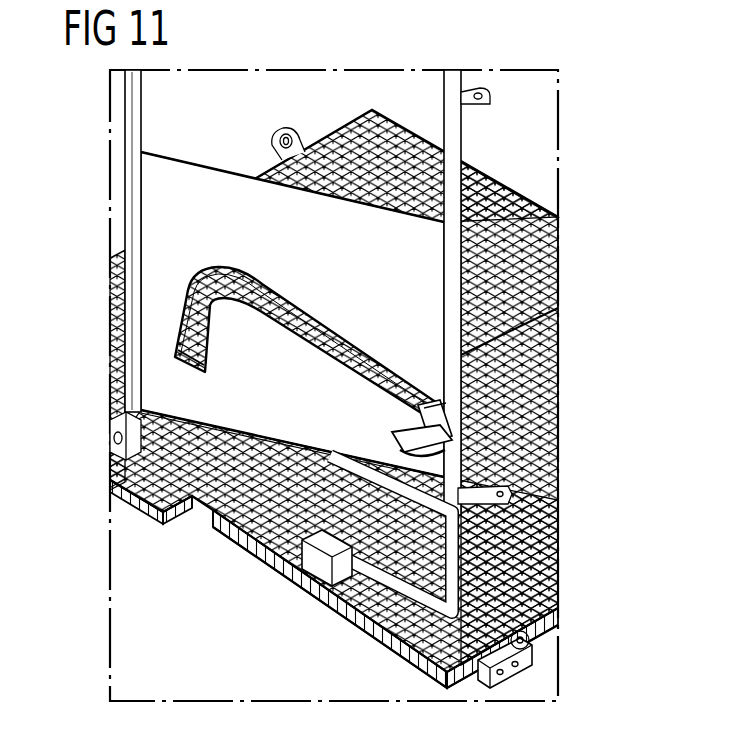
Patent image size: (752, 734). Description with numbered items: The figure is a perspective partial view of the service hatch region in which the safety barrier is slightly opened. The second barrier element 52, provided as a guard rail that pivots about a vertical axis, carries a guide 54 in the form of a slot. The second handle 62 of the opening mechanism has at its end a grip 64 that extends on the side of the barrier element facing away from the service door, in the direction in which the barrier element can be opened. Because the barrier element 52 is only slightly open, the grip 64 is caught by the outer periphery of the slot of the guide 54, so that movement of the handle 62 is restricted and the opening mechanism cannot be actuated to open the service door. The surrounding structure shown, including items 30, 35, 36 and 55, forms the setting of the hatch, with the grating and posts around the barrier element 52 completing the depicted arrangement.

The container module 30 is at (574, 108).
The second barrier element 52 is at (132, 108).
The guide 54 is at (192, 320).
The end plate of guide arm 55 is at (414, 447).
The grip 64 is at (430, 432).
The grating base platform 35 is at (273, 583).
The platform frame edge 36 is at (392, 653).
The second handle 62 is at (392, 582).